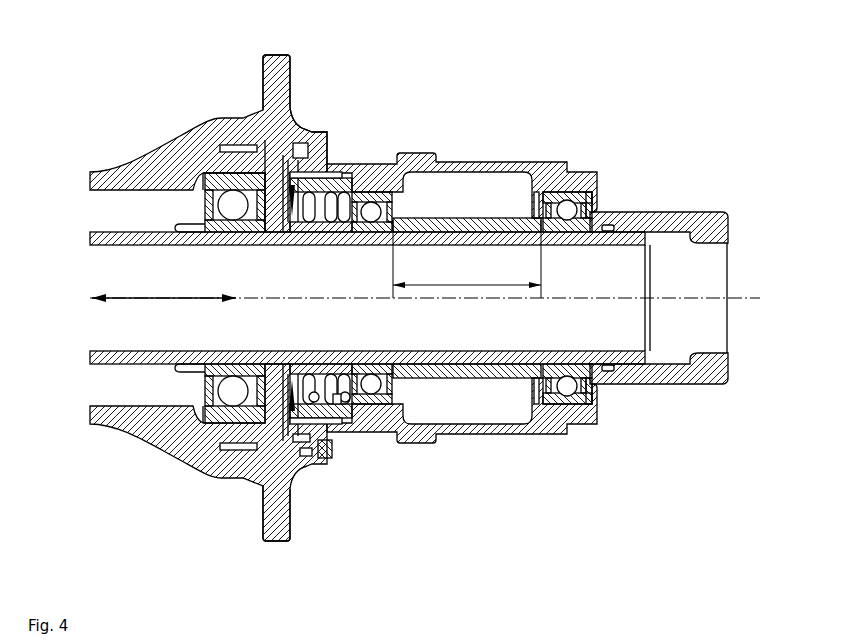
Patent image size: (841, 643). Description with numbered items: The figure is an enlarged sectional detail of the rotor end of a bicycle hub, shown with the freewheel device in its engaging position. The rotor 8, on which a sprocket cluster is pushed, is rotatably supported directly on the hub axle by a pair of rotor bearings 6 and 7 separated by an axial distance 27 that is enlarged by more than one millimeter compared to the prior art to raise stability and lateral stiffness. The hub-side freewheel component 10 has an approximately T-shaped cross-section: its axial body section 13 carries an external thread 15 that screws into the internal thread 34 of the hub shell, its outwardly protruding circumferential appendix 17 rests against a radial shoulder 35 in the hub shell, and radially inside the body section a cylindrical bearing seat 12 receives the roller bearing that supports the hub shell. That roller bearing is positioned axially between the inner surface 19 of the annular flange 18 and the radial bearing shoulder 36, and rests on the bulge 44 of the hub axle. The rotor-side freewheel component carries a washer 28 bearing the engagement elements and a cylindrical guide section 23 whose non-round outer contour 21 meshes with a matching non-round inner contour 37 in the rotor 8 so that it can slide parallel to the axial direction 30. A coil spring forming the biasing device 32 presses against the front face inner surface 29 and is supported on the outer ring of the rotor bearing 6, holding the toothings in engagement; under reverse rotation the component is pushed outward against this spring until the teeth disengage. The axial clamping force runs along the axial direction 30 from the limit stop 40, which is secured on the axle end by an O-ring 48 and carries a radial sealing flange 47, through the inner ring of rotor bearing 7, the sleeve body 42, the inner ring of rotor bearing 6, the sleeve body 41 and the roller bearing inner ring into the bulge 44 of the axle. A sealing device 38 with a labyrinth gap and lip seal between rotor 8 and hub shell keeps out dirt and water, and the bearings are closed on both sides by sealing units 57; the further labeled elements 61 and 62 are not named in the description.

The rotor bearing 6 is at (368, 233).
The rotor bearing 7 is at (567, 232).
The rotor 8 is at (538, 162).
The hub-side freewheel component 10 is at (213, 142).
The cylindrical bearing seat 12 is at (228, 427).
The axial body section 13 is at (235, 163).
The external thread 15 is at (240, 148).
The appendix 17 is at (295, 117).
The annular flange 18 is at (280, 222).
The inner surface 19 is at (252, 203).
The non-round outer contour 21 is at (343, 173).
The guide section 23 is at (337, 400).
The axial distance 27 is at (455, 286).
The washer 28 is at (303, 385).
The front face inner surface 29 is at (323, 387).
The axial direction 30 is at (155, 299).
The biasing device 32 is at (333, 227).
The internal thread 34 is at (232, 455).
The radial shoulder 35 is at (257, 148).
The radial bearing shoulder 36 is at (207, 182).
The non-round inner contour 37 is at (320, 173).
The sealing device 38 is at (302, 467).
The limit stop 40 is at (706, 216).
The sleeve body 41 is at (315, 227).
The sleeve body 42 is at (472, 225).
The bulge 44 is at (195, 225).
The radial sealing flange 47 is at (597, 193).
The O-ring 48 is at (607, 231).
The sealing unit 57 is at (257, 383).
The bearing 61 is at (380, 370).
The bearing outer ring 62 is at (387, 402).